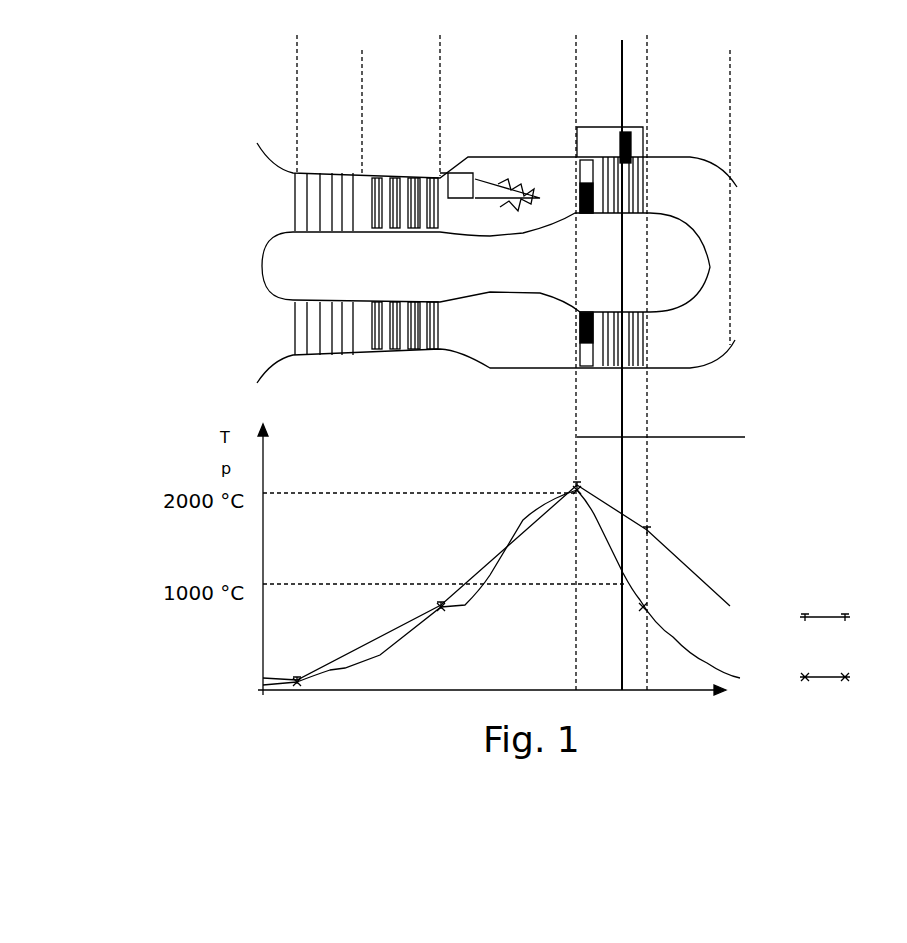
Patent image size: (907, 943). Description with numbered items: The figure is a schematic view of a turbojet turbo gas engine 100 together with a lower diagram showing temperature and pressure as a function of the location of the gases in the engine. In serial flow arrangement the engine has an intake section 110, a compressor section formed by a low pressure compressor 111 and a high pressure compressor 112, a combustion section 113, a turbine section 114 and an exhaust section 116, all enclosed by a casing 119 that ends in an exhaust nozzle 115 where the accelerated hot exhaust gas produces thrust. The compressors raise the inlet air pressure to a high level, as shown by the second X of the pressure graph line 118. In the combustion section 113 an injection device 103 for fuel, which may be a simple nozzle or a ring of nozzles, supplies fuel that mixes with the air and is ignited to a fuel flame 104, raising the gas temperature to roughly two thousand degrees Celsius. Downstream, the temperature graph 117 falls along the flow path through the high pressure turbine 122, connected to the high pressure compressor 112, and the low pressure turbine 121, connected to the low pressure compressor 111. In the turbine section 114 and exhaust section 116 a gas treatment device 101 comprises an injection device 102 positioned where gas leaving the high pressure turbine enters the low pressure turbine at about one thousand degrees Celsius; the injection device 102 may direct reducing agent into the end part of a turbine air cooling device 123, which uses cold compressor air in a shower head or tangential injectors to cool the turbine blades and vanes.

The turbo gas engine 100 is at (150, 142).
The gas treatment device 101 is at (578, 128).
The injection device 102 is at (590, 147).
The injection device for fuel 103 is at (437, 177).
The fuel flame 104 is at (513, 185).
The intake section 110 is at (297, 35).
The low pressure compressor 111 is at (342, 358).
The high pressure compressor 112 is at (437, 178).
The combustion section 113 is at (575, 35).
The turbine section 114 is at (647, 35).
The exhaust nozzle 115 is at (690, 265).
The exhaust section 116 is at (661, 456).
The temperature graph 117 is at (581, 583).
The pressure graph line 118 is at (581, 587).
The casing 119 is at (737, 182).
The low pressure turbine 121 is at (580, 343).
The high pressure turbine 122 is at (606, 367).
The turbine air cooling device 123 is at (632, 150).